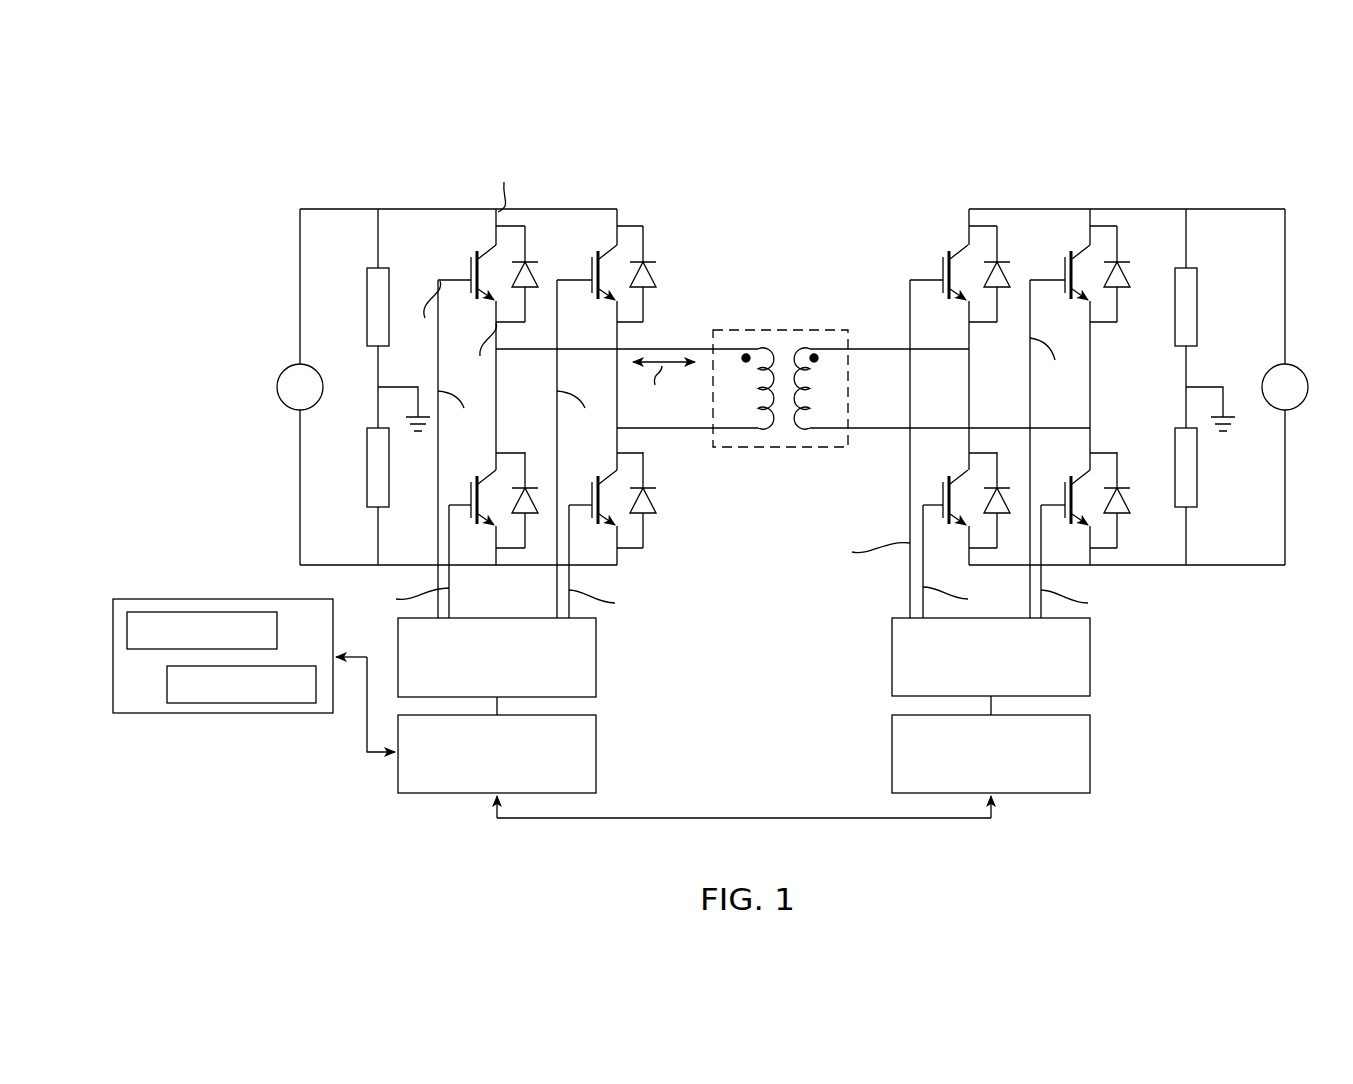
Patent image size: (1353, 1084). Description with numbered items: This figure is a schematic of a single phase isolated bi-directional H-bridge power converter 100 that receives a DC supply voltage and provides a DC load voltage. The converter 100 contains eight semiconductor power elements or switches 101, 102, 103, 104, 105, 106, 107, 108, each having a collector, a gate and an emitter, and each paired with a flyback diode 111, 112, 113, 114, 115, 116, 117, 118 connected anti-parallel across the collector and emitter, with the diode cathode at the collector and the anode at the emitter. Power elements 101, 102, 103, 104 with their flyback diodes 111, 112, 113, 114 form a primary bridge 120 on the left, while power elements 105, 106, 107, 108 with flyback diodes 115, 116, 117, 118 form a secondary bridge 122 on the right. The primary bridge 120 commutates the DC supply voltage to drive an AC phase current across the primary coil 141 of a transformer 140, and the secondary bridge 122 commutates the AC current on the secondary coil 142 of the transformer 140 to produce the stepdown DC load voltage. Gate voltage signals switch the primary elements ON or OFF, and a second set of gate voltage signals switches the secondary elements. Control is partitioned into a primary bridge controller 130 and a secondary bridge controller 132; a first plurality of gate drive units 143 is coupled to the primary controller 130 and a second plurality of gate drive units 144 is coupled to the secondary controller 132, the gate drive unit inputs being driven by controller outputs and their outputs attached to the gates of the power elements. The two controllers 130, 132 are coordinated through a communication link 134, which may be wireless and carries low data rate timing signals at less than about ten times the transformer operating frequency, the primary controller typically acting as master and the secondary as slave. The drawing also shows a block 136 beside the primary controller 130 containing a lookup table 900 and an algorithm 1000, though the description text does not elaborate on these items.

The power converter 100 is at (835, 170).
The primary bridge 120 is at (440, 193).
The secondary bridge 122 is at (1087, 193).
The power element 101 is at (468, 266).
The power element 102 is at (470, 500).
The power element 103 is at (590, 268).
The power element 104 is at (590, 500).
The power element 105 is at (942, 268).
The power element 106 is at (945, 498).
The power element 107 is at (1063, 270).
The power element 108 is at (1064, 494).
The flyback diode 111 is at (528, 258).
The flyback diode 112 is at (540, 495).
The flyback diode 113 is at (655, 272).
The flyback diode 114 is at (655, 497).
The flyback diode 115 is at (1000, 265).
The flyback diode 116 is at (1003, 492).
The flyback diode 117 is at (1120, 265).
The flyback diode 118 is at (1123, 492).
The transformer 140 is at (768, 328).
The primary coil 141 is at (767, 432).
The secondary coil 142 is at (808, 432).
The first plurality of gate drive units 143 is at (596, 668).
The second plurality of gate drive units 144 is at (1090, 675).
The primary bridge controller 130 is at (596, 752).
The secondary bridge controller 132 is at (1090, 752).
The communication link 134 is at (925, 820).
The memory / control module 136 is at (221, 649).
The lookup table 900 is at (200, 612).
The algorithm 1000 is at (237, 703).